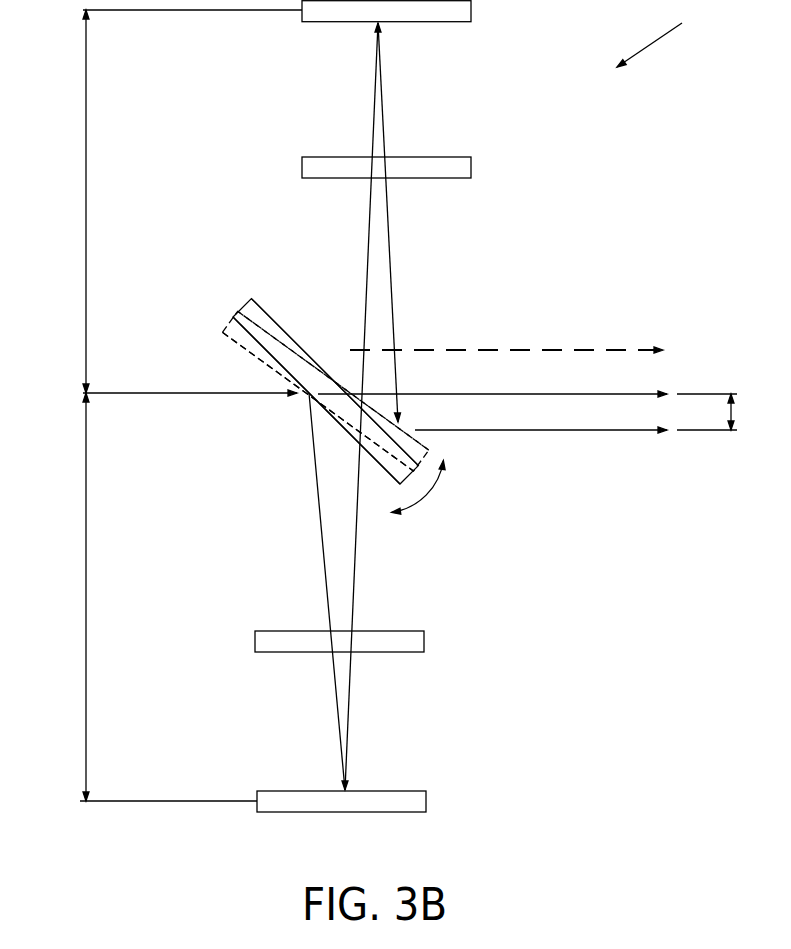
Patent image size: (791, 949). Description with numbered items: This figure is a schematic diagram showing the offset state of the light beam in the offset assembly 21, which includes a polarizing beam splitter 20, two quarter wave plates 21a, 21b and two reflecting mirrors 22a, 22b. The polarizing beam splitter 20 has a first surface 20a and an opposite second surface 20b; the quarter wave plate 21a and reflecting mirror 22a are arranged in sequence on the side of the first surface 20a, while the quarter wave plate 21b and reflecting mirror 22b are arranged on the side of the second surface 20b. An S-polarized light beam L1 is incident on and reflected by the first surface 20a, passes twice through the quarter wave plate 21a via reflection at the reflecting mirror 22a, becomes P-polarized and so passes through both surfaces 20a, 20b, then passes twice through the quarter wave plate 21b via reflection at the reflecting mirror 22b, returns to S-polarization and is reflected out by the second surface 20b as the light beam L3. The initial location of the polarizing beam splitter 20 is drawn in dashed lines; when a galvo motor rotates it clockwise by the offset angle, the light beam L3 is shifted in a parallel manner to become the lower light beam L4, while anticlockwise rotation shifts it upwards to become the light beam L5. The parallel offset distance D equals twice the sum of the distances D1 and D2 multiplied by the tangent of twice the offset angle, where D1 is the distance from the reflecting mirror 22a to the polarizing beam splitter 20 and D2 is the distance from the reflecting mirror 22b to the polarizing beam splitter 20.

The polarizing beam splitter 20 is at (247, 298).
The first surface 20a is at (231, 338).
The second surface 20b is at (257, 300).
The offset assembly 21 is at (667, 37).
The ¼ wave plate 21a is at (424, 641).
The ¼ wave plate 21b is at (471, 168).
The reflecting mirror 22a is at (426, 801).
The reflecting mirror 22b is at (471, 10).
The light beam L1 is at (200, 393).
The light beam L3 is at (540, 394).
The light beam L4 is at (580, 430).
The light beam L5 is at (506, 324).
The parallel offset distance D is at (717, 412).
The distance D1 is at (151, 597).
The distance D2 is at (173, 201).